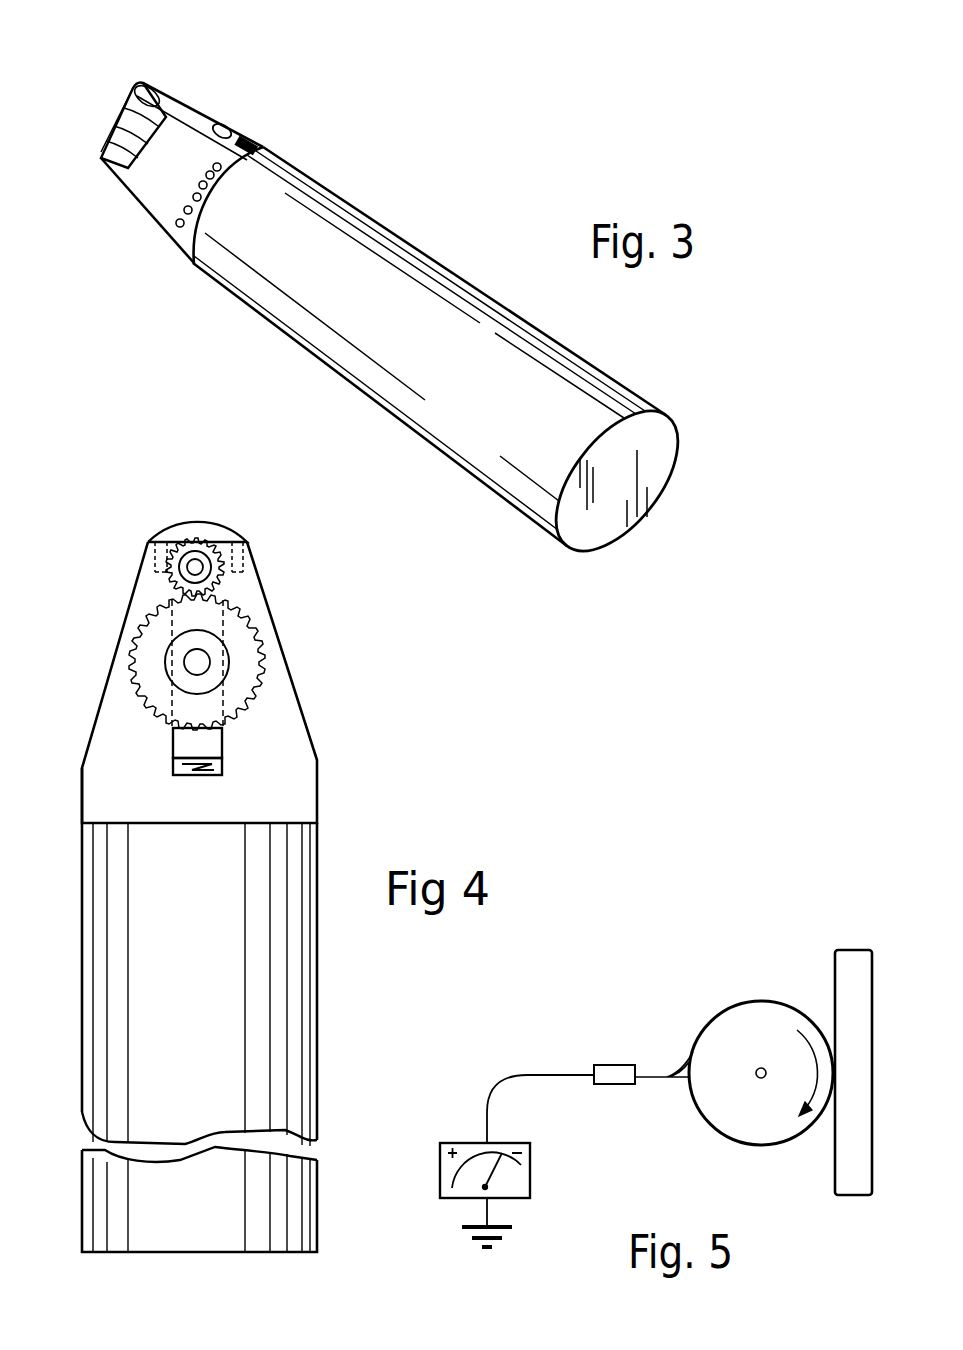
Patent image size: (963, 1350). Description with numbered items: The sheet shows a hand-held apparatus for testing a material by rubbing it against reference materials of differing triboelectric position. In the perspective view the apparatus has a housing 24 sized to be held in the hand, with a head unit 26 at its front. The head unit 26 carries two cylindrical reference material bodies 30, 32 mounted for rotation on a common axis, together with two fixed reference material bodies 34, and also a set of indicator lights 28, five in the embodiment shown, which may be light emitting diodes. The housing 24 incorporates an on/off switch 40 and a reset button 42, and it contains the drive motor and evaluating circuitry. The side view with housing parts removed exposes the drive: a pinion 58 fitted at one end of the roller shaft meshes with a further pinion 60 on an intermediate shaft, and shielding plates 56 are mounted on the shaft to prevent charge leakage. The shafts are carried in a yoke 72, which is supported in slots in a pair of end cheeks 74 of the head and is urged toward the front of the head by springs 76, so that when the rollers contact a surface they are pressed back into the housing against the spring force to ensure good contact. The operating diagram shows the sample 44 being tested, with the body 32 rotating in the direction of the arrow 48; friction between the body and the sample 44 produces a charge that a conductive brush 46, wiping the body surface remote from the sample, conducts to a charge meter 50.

In FIG. 3, the housing 24 is at (372, 238).
In FIG. 4, the housing 24 is at (290, 945).
In FIG. 3, the head unit 26 is at (203, 113).
In FIG. 4, the head unit 26 is at (283, 712).
In FIG. 3, the indicator lights 28 is at (181, 229).
In FIG. 3, the cylindrical reference material body 30 is at (101, 142).
In FIG. 3, the cylindrical reference material body 32 is at (127, 108).
In FIG. 5, the cylindrical reference material body 32 is at (737, 1010).
In FIG. 3, the fixed reference material bodies 34 is at (153, 82).
In FIG. 4, the fixed reference material bodies 34 is at (203, 527).
In FIG. 3, the on/off switch 40 is at (252, 142).
In FIG. 3, the reset button 42 is at (224, 126).
In FIG. 5, the sample 44 is at (847, 957).
In FIG. 5, the conductive brush 46 is at (680, 1068).
In FIG. 5, the arrow 48 is at (813, 1080).
In FIG. 5, the charge meter 50 is at (527, 1162).
In FIG. 3, the shielding plates 56 is at (113, 112).
In FIG. 4, the pinion 58 is at (168, 572).
In FIG. 4, the further pinion 60 is at (240, 643).
In FIG. 4, the yoke 72 is at (208, 742).
In FIG. 4, the end cheeks 74 is at (107, 770).
In FIG. 4, the springs 76 is at (223, 767).